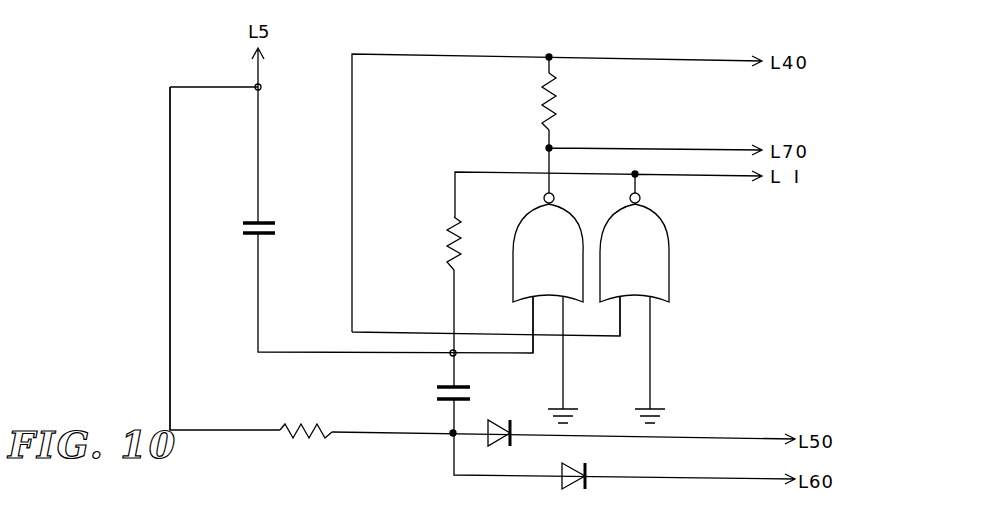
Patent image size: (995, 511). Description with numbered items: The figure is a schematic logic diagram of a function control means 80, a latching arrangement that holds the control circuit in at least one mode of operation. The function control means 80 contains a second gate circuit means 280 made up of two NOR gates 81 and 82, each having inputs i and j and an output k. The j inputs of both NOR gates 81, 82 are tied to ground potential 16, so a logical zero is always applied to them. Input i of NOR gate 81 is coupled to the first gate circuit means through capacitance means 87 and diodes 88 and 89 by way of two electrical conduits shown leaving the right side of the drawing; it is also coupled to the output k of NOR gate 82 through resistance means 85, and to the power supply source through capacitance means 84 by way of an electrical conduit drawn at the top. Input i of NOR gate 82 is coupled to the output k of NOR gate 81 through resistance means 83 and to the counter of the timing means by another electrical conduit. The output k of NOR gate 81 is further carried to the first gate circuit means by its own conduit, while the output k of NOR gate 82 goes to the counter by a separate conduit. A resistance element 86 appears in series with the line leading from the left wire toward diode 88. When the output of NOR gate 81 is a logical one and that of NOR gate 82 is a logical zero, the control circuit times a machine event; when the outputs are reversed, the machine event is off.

The function control means 80 is at (157, 152).
The NOR gate 81 is at (524, 227).
The NOR gate 82 is at (624, 224).
The resistance means 83 is at (553, 97).
The capacitance means 84 is at (260, 222).
The resistance means 85 is at (449, 238).
The resistor 86 is at (318, 436).
The capacitance means 87 is at (461, 386).
The diode 88 is at (497, 425).
The diode 89 is at (588, 474).
The ground potential 16 is at (566, 412).
The second gate circuit means 280 is at (623, 271).